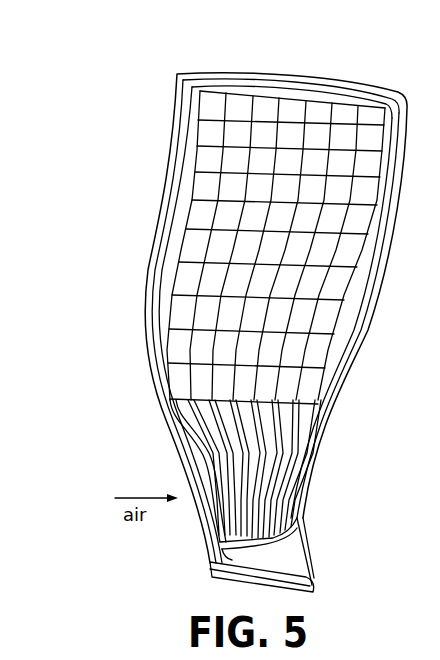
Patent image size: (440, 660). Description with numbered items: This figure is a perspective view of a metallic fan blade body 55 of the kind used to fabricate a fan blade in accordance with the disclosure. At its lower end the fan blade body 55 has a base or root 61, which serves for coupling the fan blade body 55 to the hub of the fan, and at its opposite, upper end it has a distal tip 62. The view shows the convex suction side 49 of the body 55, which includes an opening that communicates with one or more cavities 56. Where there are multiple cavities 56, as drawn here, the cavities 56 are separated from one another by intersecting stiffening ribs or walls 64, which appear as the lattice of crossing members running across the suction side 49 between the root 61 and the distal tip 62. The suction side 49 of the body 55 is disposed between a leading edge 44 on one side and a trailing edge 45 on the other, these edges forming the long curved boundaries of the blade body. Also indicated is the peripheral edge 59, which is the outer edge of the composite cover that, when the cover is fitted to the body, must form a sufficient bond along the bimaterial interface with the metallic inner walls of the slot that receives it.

The leading edge 44 is at (143, 290).
The trailing edge 45 is at (338, 352).
The convex suction side 49 is at (195, 302).
The fan blade body 55 is at (138, 218).
The cavities 56 is at (347, 170).
The peripheral edge 59 is at (193, 415).
The root 61 is at (210, 569).
The distal tip 62 is at (250, 73).
The stiffening ribs 64 is at (252, 124).